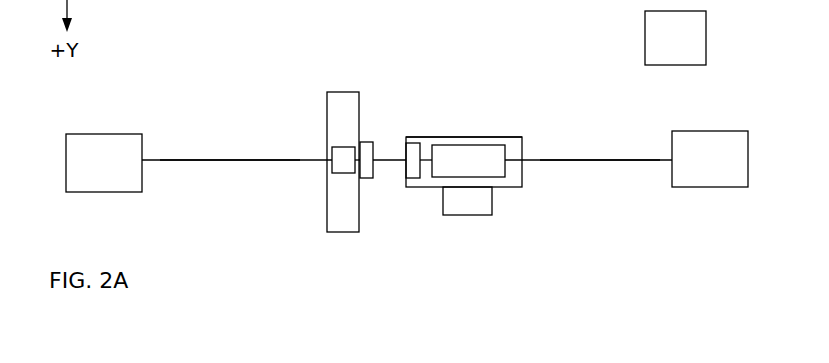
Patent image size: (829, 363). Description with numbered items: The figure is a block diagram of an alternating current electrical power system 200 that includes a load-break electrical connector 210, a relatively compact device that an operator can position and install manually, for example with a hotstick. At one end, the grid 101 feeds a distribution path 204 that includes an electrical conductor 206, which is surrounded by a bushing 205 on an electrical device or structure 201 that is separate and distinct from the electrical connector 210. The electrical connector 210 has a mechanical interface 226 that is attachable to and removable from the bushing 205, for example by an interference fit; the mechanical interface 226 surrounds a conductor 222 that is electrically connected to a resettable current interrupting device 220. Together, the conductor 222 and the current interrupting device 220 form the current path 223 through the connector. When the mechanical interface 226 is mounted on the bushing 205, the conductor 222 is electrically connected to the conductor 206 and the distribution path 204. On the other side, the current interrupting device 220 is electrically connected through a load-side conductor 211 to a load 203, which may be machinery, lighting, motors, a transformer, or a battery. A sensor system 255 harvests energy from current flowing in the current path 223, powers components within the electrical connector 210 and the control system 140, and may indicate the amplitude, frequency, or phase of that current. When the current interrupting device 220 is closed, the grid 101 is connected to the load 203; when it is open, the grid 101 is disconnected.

The grid 101 is at (104, 163).
The control system 140 is at (675, 38).
The alternating current (AC) electrical power system 200 is at (308, 72).
The mirror 201 is at (338, 207).
The load 203 is at (710, 159).
The distribution path 204 is at (237, 160).
The bushing 205 is at (365, 160).
The electrical conductor 206 is at (338, 157).
The load-break electrical connector 210 is at (482, 137).
The load-side conductor 211 is at (617, 160).
The resettable current interrupting device 220 is at (468, 161).
The conductor 222 is at (398, 160).
The current path 223 is at (512, 137).
The mechanical interface 226 is at (407, 137).
The sensor system 255 is at (467, 201).